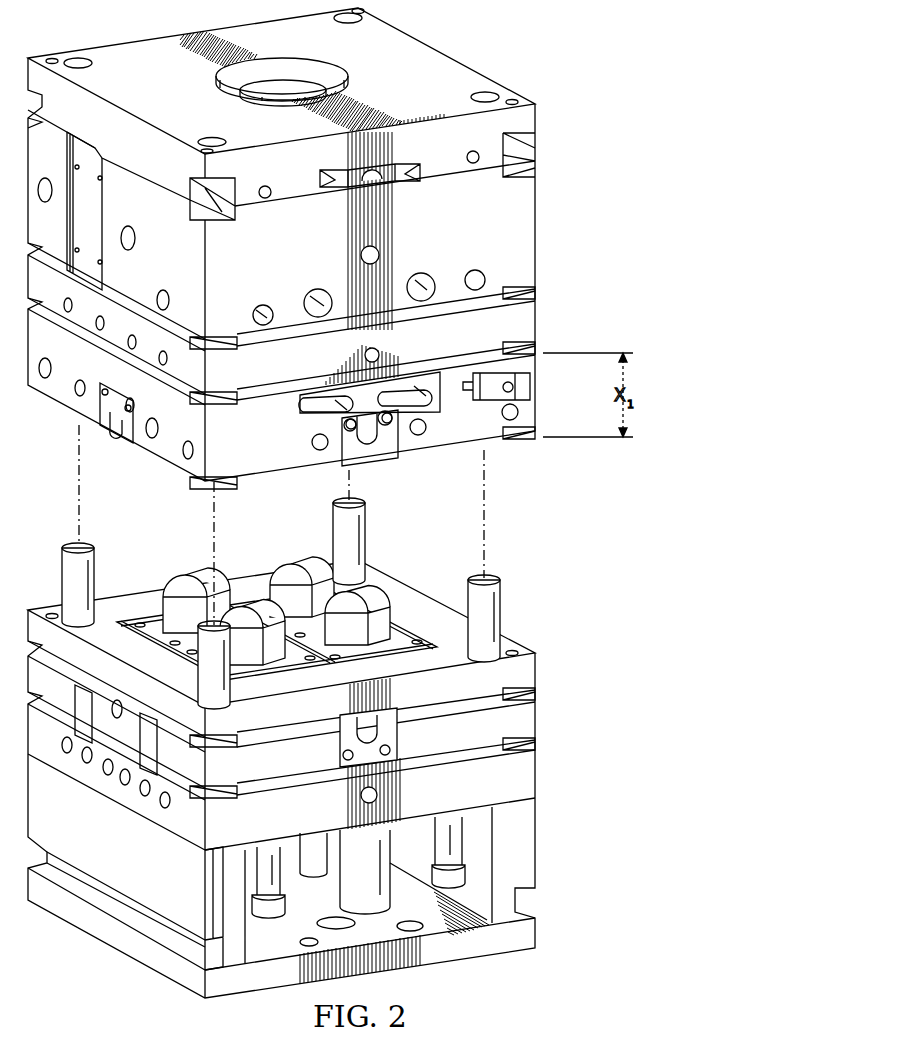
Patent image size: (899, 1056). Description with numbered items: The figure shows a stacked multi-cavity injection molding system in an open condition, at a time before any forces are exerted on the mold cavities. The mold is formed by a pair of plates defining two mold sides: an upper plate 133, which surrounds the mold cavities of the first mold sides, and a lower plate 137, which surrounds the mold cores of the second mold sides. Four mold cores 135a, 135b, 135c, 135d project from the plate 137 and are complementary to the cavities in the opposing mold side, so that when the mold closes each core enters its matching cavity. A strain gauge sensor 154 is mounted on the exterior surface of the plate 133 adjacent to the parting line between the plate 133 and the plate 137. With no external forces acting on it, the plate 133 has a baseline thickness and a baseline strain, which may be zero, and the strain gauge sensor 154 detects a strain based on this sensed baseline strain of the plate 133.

The plate 133 is at (443, 440).
The plate 137 is at (530, 716).
The mold core 135a is at (378, 590).
The mold core 135b is at (263, 603).
The mold core 135c is at (183, 575).
The mold core 135d is at (315, 562).
The strain gauge sensor 154 is at (530, 366).